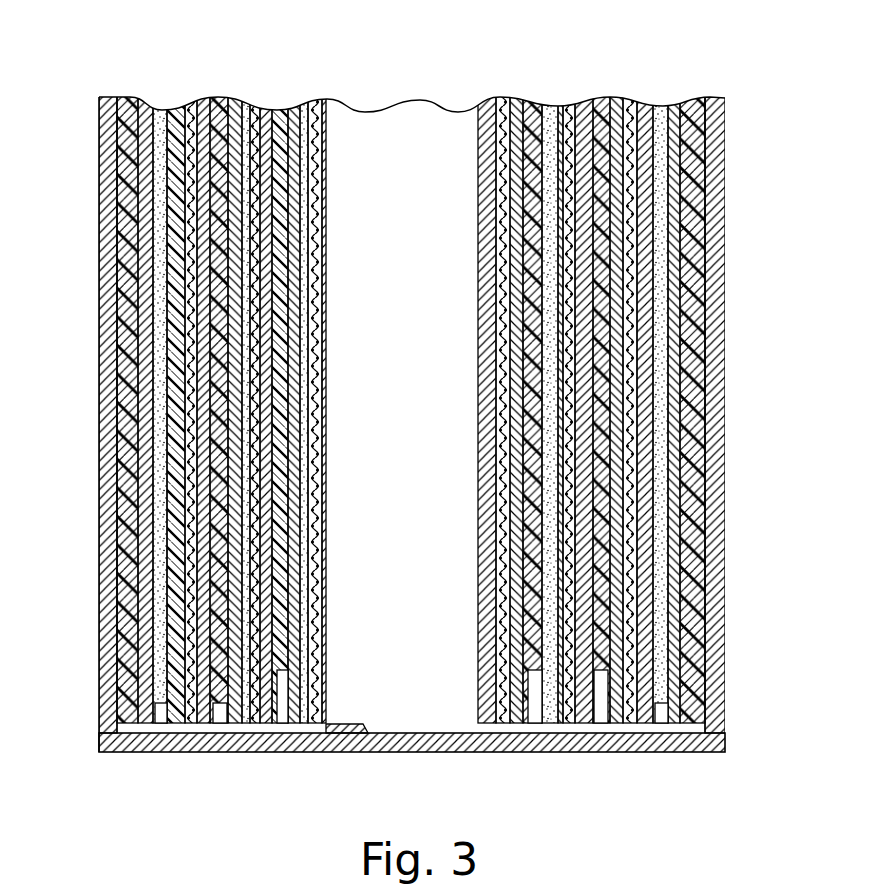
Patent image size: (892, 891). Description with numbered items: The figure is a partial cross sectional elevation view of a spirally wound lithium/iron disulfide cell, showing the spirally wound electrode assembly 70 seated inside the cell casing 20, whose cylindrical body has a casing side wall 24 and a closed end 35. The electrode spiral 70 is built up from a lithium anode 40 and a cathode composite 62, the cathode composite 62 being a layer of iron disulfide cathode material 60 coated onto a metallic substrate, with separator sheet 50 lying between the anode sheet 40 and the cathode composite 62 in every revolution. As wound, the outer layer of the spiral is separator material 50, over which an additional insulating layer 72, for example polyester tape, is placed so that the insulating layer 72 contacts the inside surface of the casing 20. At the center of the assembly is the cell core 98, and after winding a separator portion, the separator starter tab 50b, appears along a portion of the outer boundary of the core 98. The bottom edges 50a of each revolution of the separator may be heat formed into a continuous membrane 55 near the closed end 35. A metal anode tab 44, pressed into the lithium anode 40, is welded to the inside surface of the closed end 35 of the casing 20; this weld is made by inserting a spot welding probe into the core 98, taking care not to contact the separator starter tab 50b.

The cell casing 20 is at (725, 259).
The casing side wall 24 is at (98, 498).
The closed end of casing 35 is at (578, 752).
The lithium anode 40 is at (661, 392).
The anode tab 44 is at (340, 728).
The separator sheet 50 is at (653, 341).
The bottom edges of separator 50a is at (650, 730).
The separator starter tab 50b is at (488, 103).
The continuous membrane 55 is at (520, 725).
The cathode material coating 60 is at (638, 543).
The cathode composite 62 is at (646, 626).
The spirally wound electrode assembly 70 is at (117, 663).
The insulating layer 72 is at (698, 176).
The cell core 98 is at (386, 388).